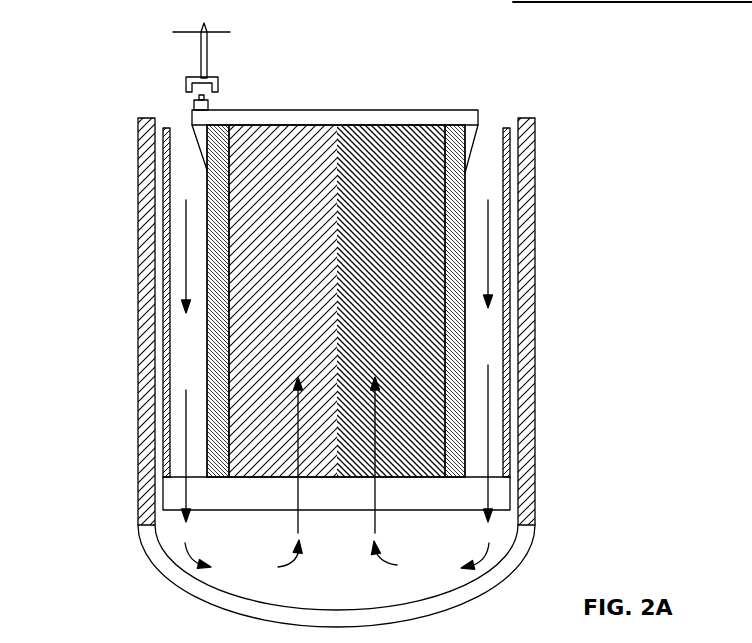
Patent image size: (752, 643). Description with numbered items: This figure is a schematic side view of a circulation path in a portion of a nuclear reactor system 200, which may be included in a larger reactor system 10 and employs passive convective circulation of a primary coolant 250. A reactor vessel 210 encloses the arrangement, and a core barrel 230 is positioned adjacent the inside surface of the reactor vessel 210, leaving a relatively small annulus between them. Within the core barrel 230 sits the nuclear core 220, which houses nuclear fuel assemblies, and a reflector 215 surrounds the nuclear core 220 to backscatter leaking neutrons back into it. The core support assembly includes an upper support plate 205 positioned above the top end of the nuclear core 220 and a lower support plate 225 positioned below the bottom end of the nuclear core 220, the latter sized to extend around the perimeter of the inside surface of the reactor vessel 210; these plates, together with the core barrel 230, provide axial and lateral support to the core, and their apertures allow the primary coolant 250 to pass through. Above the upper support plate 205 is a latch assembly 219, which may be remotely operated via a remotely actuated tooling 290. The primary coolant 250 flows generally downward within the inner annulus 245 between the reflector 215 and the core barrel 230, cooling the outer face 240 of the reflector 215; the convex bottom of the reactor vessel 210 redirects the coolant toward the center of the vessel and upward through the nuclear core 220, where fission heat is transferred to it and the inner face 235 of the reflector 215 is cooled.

The nuclear reactor system (partial view) 10 is at (645, 3).
The nuclear reactor system 200 is at (128, 30).
The upper support plate 205 is at (345, 110).
The reactor vessel 210 is at (134, 191).
The reflector 215 is at (473, 178).
The latch assembly 219 is at (188, 101).
The nuclear core 220 is at (275, 155).
The lower support plate 225 is at (498, 512).
The core barrel 230 is at (160, 349).
The inner face 235 is at (447, 156).
The outer face 240 is at (465, 332).
The inner annulus 245 is at (494, 125).
The primary coolant 250 is at (185, 265).
The remotely actuated tooling 290 is at (212, 56).